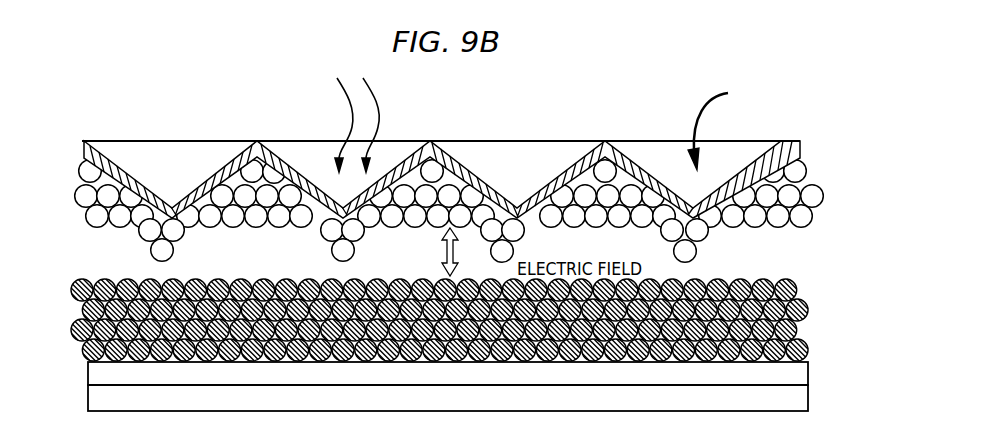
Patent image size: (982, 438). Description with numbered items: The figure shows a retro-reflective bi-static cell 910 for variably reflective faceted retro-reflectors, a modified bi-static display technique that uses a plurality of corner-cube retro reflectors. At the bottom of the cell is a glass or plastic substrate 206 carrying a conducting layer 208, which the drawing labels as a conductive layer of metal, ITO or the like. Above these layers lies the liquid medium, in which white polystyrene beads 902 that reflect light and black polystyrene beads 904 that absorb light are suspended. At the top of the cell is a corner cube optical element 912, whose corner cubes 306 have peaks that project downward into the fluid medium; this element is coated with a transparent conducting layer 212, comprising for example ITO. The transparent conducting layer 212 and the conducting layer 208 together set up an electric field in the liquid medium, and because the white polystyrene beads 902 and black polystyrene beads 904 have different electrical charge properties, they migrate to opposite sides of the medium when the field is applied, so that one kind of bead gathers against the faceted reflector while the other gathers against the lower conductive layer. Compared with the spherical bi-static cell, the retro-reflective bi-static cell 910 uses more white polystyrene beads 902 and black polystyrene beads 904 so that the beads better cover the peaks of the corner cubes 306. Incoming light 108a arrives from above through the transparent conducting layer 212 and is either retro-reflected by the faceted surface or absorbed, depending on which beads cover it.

The incident light rays 108a is at (383, 112).
The corner cube optical element 912 is at (510, 148).
The retro-reflective bi-static cell 910 is at (620, 121).
The corner cubes 306 is at (721, 127).
The transparent conducting layer 212 is at (803, 148).
The white polystyrene beads 902 is at (740, 225).
The black polystyrene beads 904 is at (795, 279).
The conducting layer 208 is at (808, 376).
The glass or plastic substrate 206 is at (808, 400).